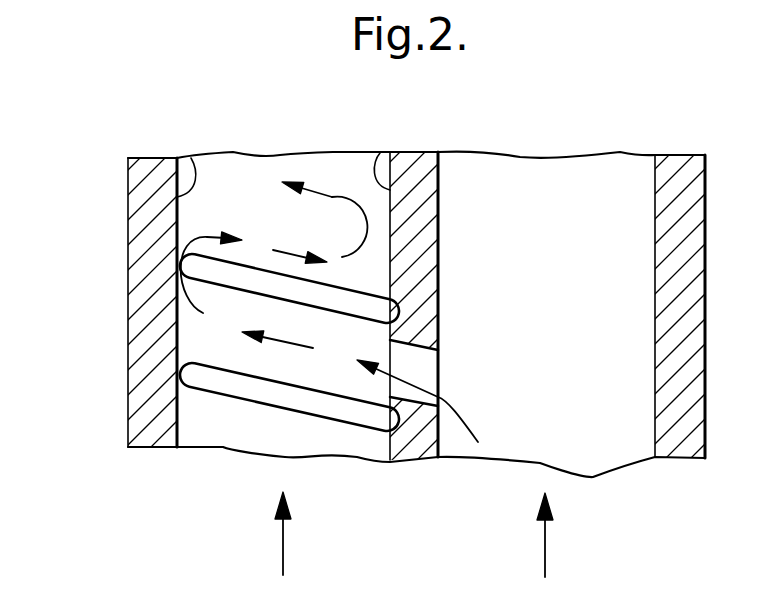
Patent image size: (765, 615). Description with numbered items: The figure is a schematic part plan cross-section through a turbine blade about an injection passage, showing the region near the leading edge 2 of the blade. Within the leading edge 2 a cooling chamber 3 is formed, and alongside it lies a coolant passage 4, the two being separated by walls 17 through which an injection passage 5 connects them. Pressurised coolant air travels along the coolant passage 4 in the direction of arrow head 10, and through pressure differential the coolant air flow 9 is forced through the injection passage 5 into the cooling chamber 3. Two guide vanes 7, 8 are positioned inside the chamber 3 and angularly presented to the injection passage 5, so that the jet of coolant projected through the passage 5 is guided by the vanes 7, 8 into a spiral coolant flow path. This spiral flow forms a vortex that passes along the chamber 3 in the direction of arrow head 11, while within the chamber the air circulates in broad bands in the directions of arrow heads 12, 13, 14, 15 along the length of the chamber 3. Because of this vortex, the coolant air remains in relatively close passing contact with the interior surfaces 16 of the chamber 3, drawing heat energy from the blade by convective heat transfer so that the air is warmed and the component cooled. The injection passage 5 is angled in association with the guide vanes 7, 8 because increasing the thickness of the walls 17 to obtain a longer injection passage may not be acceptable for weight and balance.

The leading edge 2 is at (143, 222).
The cooling chamber 3 is at (270, 217).
The coolant passage 4 is at (557, 259).
The injection passage 5 is at (425, 365).
The guide vane 7 is at (222, 382).
The guide vane 8 is at (240, 278).
The coolant flow arrow head 9 is at (457, 407).
The arrow head 10 is at (549, 553).
The arrow head 11 is at (283, 552).
The arrow head 12 is at (287, 342).
The arrow head 13 is at (187, 277).
The arrow head 14 is at (292, 249).
The arrow head 15 is at (332, 197).
The interior surfaces 16 is at (191, 158).
The walls 17 is at (410, 210).